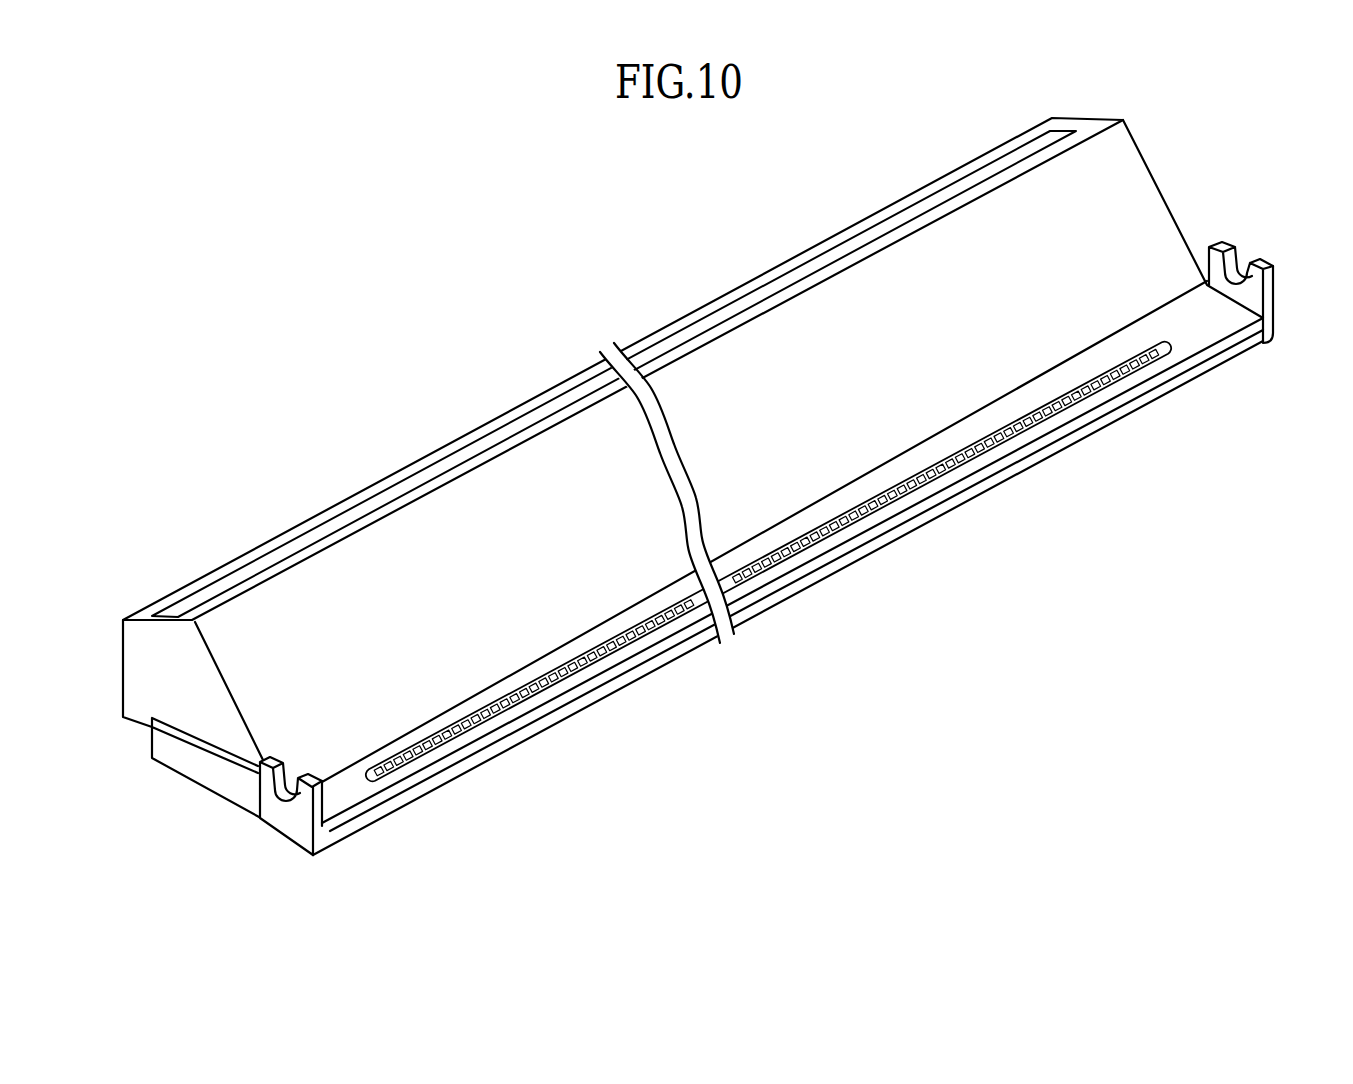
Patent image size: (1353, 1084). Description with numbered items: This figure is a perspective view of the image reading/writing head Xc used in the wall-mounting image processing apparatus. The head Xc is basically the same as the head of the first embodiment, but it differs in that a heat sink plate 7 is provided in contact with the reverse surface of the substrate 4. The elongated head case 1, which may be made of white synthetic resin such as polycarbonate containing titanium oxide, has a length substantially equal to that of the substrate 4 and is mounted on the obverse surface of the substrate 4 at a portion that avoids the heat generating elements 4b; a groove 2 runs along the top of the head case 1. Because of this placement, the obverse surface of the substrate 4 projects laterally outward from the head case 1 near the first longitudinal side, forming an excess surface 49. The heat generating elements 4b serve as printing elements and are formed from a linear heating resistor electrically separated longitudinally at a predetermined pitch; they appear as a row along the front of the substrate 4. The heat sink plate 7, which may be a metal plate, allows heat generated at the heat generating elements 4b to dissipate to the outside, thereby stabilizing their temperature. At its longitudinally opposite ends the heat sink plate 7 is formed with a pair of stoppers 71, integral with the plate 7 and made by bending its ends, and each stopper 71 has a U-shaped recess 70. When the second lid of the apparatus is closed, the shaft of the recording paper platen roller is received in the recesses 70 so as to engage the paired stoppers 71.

The head case 1 is at (145, 668).
The top groove 2 is at (298, 550).
The substrate 4 is at (614, 658).
The heat generating elements 4b is at (478, 727).
The heat sink plate 7 is at (237, 797).
The excess surface 49 is at (880, 485).
The U-shaped recess 70 is at (288, 775).
The stoppers 71 is at (318, 800).
The image reading/writing head Xc is at (472, 368).